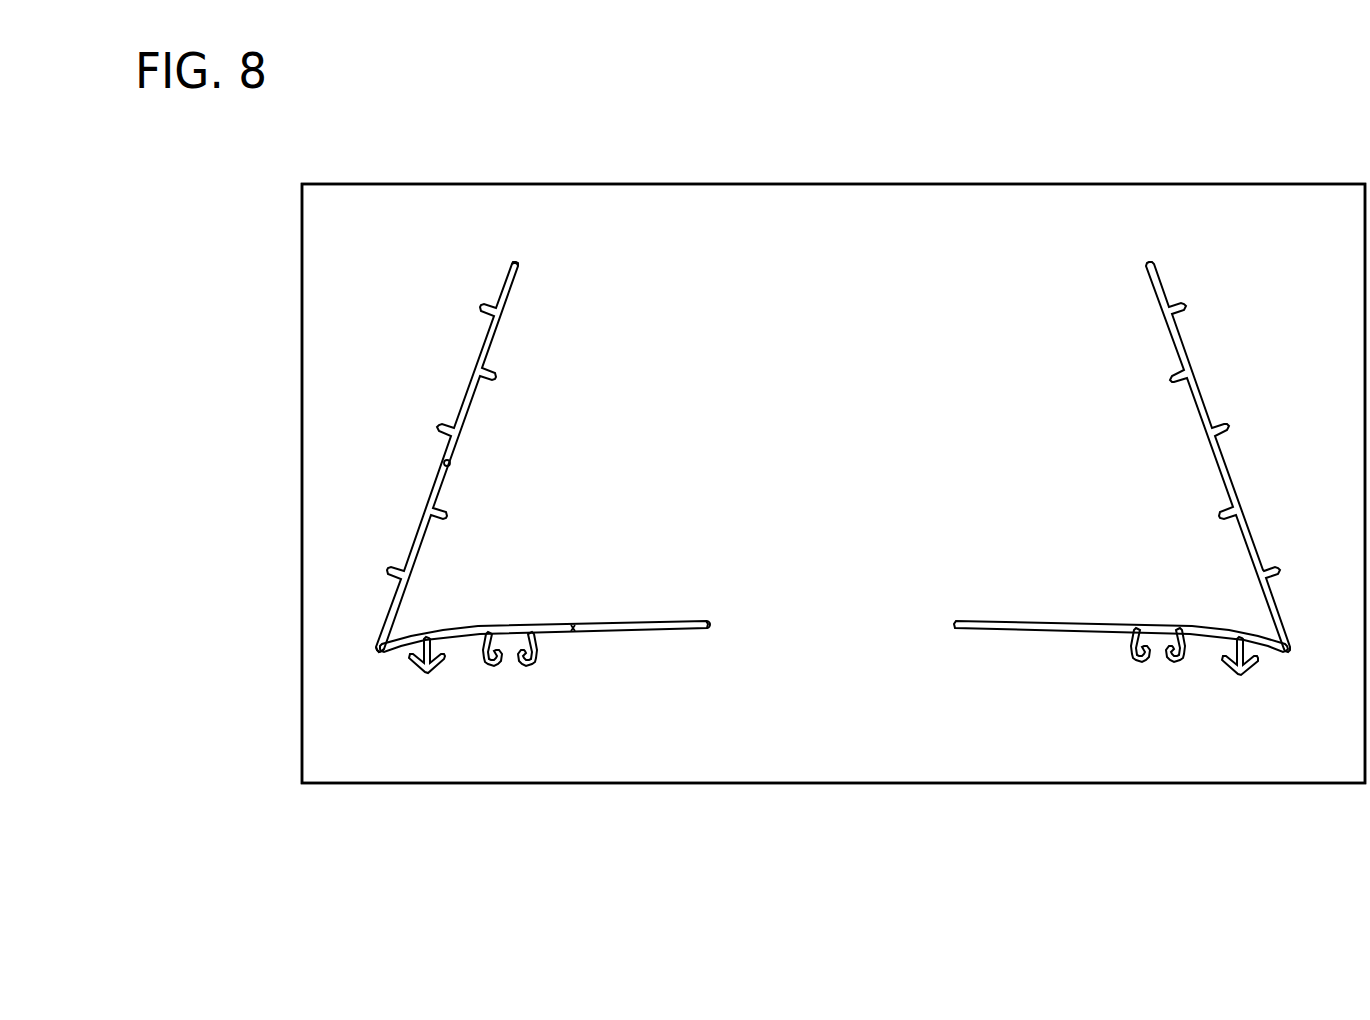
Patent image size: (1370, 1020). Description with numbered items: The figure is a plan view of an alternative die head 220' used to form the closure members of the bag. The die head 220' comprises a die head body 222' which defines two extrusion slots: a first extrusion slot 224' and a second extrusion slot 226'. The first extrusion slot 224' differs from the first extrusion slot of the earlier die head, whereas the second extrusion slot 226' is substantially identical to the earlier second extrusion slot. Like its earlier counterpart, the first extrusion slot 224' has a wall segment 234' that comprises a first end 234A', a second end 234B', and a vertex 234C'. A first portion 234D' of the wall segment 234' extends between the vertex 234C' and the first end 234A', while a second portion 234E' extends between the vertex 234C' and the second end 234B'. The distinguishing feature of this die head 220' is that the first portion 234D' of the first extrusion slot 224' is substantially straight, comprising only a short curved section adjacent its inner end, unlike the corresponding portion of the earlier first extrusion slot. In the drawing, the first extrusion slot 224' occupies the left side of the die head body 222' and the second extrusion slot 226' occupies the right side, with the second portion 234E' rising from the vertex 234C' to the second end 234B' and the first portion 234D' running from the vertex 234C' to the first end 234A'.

The die head 220' is at (833, 570).
The die head body 222' is at (833, 525).
The first extrusion slot 224' is at (560, 457).
The second extrusion slot 226' is at (1122, 468).
The wall segment 234' is at (544, 681).
The first end 234A' is at (709, 585).
The second end 234B' is at (581, 265).
The vertex 234C' is at (366, 690).
The first portion 234D' is at (584, 590).
The second portion 234E' is at (506, 467).